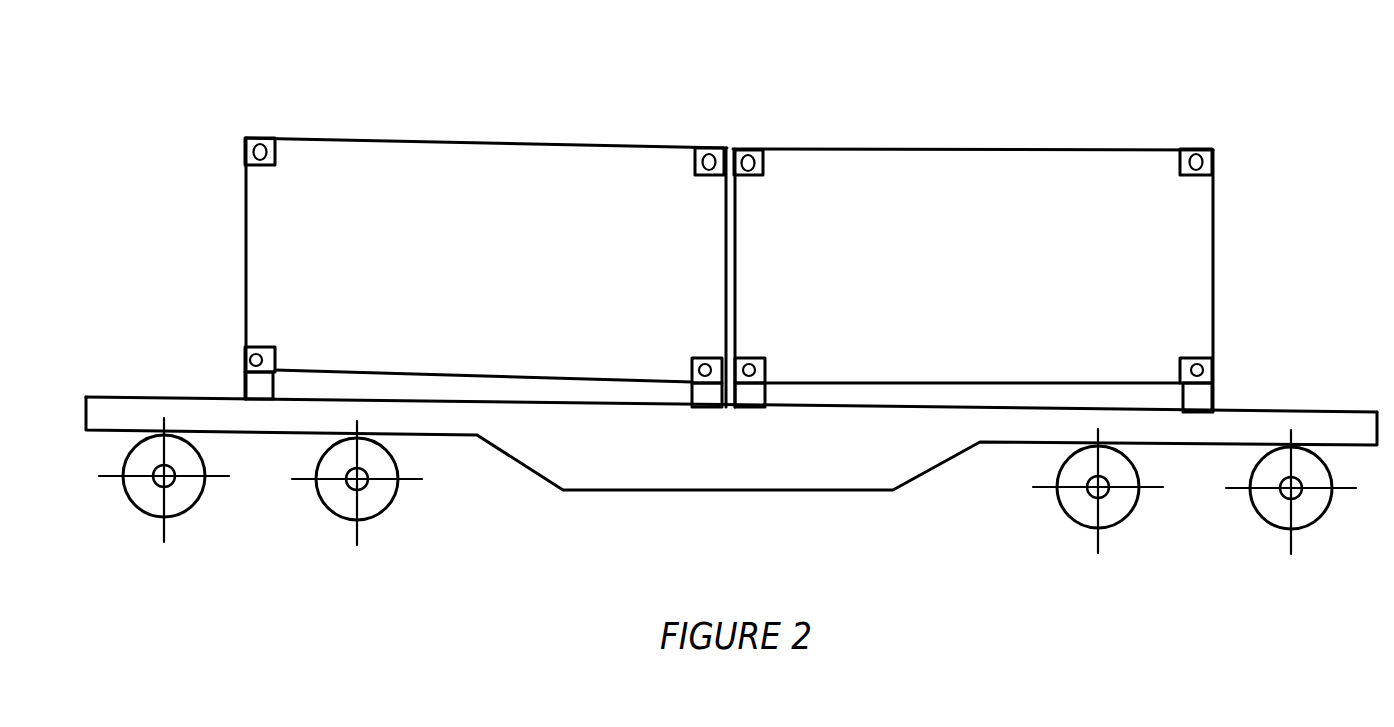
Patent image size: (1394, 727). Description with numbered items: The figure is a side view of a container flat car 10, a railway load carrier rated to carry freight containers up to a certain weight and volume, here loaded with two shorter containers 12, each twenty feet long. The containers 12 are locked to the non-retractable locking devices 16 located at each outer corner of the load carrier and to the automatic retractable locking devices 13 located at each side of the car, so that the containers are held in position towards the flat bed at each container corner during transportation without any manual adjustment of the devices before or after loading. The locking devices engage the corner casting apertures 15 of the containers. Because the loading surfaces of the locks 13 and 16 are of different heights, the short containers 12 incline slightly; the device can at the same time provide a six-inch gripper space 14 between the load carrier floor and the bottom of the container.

The container flat car 10 is at (883, 457).
The shorter container 12 is at (503, 168).
The retractable locking device 13 is at (758, 397).
The gripper space 14 is at (517, 392).
The corner casting aperture 15 is at (245, 352).
The non-retractable locking device 16 is at (253, 383).